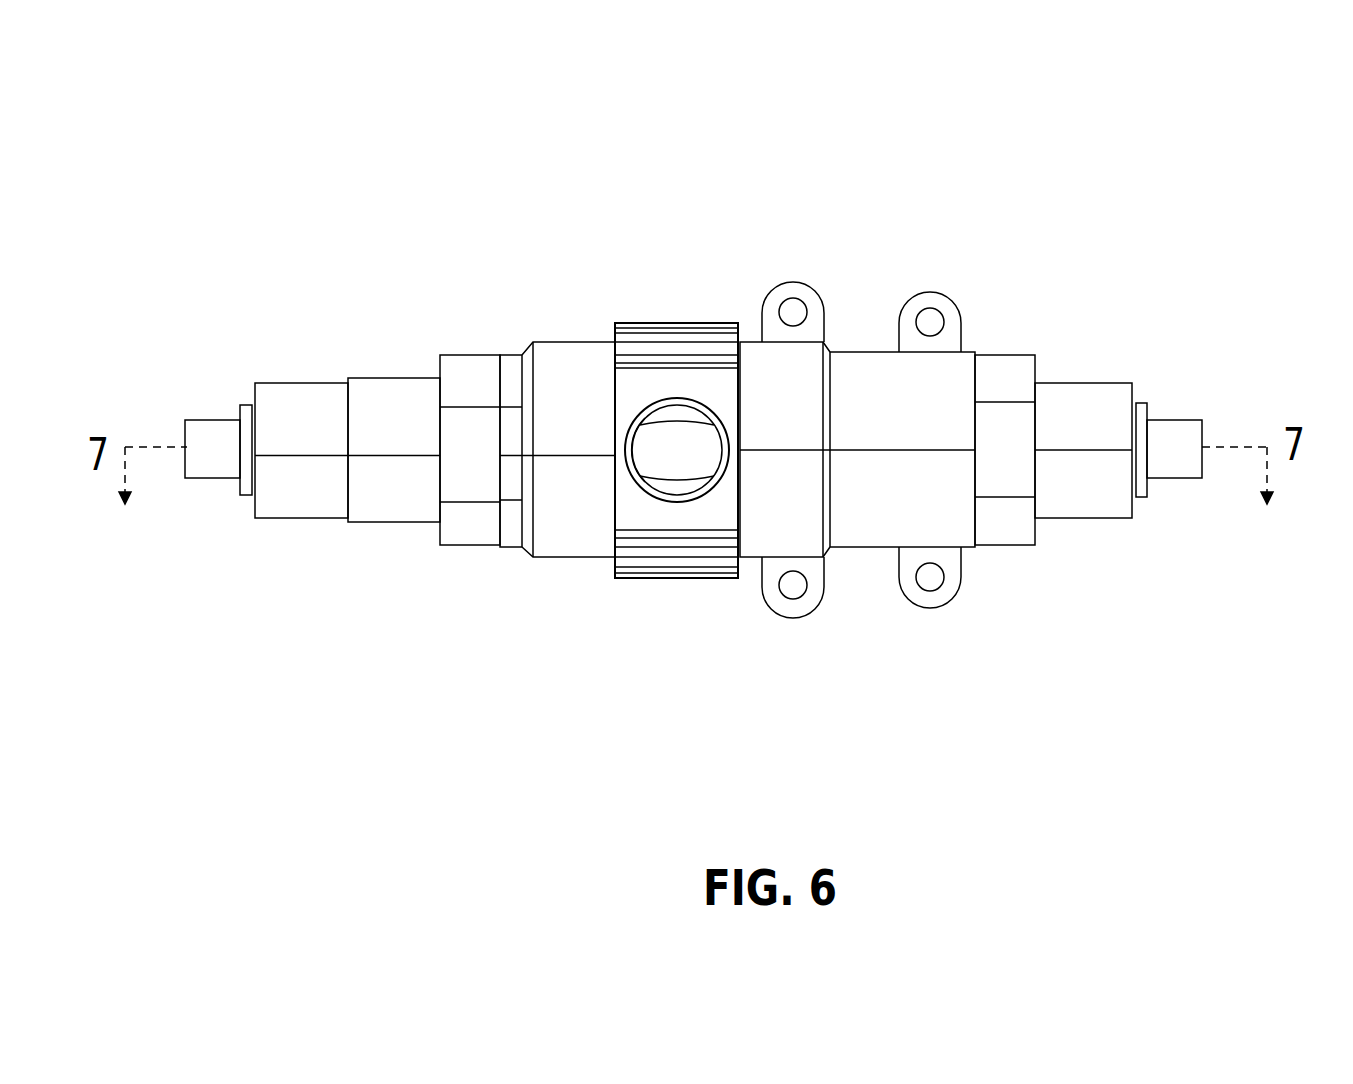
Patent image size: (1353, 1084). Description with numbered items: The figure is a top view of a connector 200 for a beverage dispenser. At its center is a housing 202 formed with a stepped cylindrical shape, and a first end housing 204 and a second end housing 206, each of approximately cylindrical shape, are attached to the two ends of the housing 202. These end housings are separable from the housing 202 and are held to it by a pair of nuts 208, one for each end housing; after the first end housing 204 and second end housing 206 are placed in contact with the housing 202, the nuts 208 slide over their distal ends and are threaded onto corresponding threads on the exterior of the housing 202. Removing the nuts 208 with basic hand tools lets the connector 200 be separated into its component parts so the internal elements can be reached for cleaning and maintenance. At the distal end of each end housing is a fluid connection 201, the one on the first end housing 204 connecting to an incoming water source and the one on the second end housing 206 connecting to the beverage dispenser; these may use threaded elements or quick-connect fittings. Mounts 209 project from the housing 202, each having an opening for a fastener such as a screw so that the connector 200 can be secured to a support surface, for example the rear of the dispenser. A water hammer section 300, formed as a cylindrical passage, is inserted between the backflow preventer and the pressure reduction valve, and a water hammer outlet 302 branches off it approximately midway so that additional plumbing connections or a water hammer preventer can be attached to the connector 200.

The connector 200 is at (1087, 222).
The fluid connection 201 is at (210, 424).
The housing 202 is at (885, 517).
The first end housing 204 is at (412, 503).
The second end housing 206 is at (1108, 457).
The nut 208 is at (467, 383).
The mount 209 is at (927, 302).
The water hammer section 300 is at (740, 357).
The water hammer outlet 302 is at (672, 480).